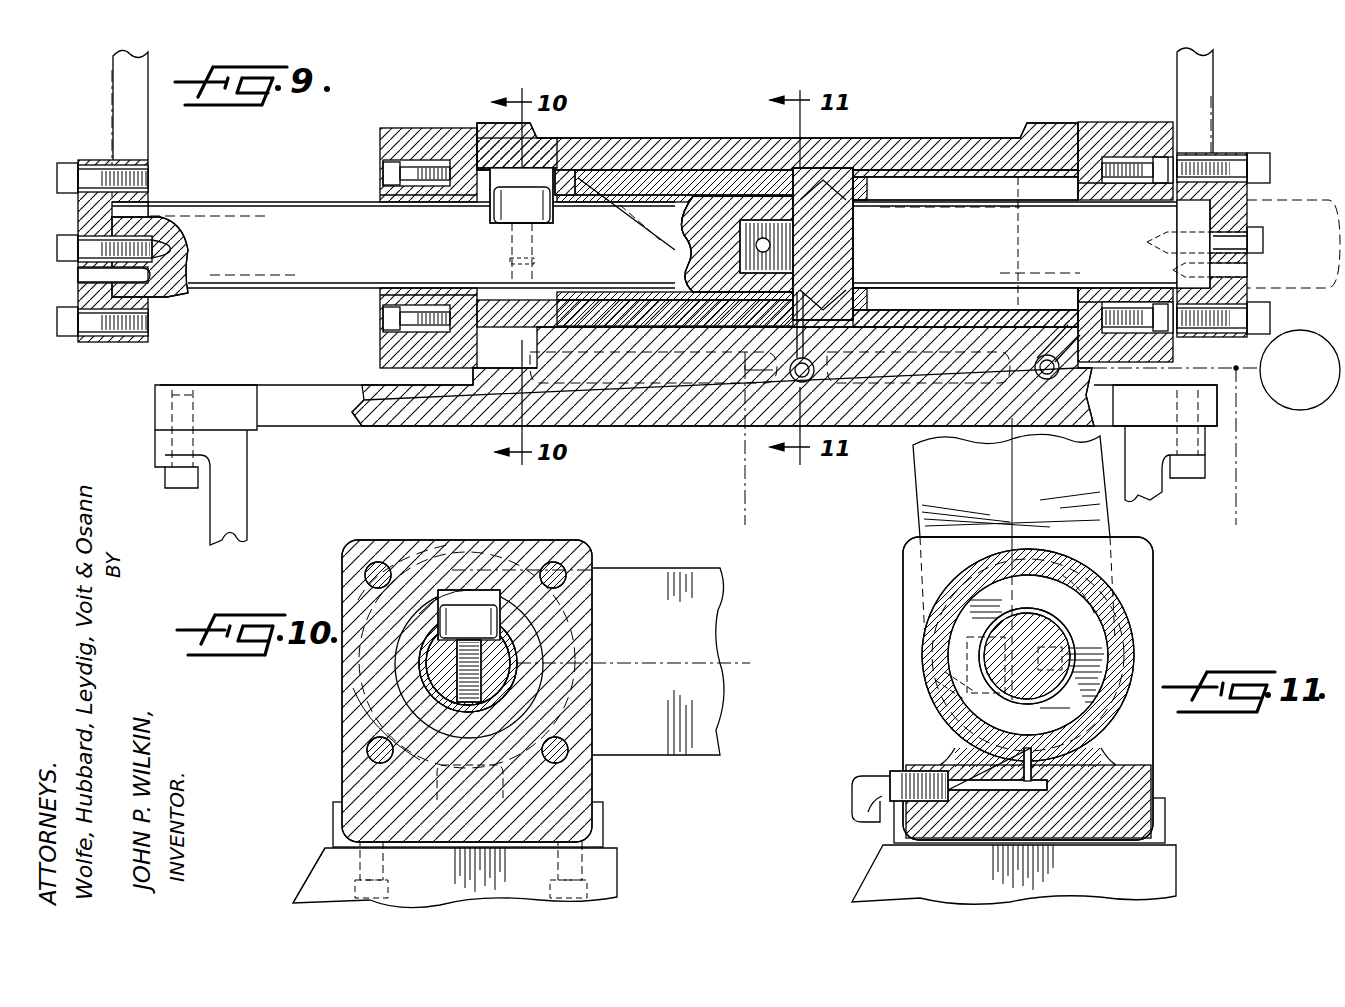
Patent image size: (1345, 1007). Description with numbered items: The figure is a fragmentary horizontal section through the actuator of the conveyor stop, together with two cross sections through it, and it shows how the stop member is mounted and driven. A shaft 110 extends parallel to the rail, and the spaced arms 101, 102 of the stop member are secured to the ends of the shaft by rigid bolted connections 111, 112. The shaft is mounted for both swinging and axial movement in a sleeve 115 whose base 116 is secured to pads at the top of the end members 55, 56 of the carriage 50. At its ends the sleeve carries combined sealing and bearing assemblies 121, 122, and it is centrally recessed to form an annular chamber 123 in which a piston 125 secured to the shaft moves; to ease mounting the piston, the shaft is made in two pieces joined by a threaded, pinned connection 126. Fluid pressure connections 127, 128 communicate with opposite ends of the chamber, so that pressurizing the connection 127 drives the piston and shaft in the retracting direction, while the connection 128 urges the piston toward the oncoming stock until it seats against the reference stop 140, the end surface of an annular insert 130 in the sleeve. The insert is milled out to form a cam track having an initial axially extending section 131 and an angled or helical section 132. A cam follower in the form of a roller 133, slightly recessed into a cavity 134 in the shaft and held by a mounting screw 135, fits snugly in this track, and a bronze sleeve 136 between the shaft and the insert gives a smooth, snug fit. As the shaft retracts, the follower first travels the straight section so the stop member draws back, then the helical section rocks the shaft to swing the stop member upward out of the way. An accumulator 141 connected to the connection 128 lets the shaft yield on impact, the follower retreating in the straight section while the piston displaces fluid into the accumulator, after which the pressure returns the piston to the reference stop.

In FIG. 10, the carriage 50 is at (300, 868).
In FIG. 9, the end member 55 is at (240, 497).
In FIG. 10, the end member 55 is at (618, 892).
In FIG. 9, the end member 56 is at (1158, 483).
In FIG. 9, the arm 101 is at (112, 92).
In FIG. 10, the arm 101 is at (715, 718).
In FIG. 11, the arm 101 is at (912, 517).
In FIG. 9, the arm 102 is at (1215, 95).
In FIG. 9, the shaft 110 is at (326, 258).
In FIG. 10, the shaft 110 is at (500, 678).
In FIG. 11, the shaft 110 is at (1060, 622).
In FIG. 9, the bolted connection 111 is at (88, 158).
In FIG. 9, the bolted connection 112 is at (1245, 160).
In FIG. 9, the sleeve 115 is at (893, 138).
In FIG. 10, the sleeve 115 is at (590, 792).
In FIG. 11, the sleeve 115 is at (1090, 655).
In FIG. 9, the base 116 is at (320, 395).
In FIG. 10, the base 116 is at (610, 833).
In FIG. 9, the sealing and bearing assembly 121 is at (440, 127).
In FIG. 9, the sealing and bearing assembly 122 is at (1112, 122).
In FIG. 9, the annular chamber 123 is at (955, 172).
In FIG. 9, the piston 125 is at (866, 196).
In FIG. 9, the threaded, pinned connection 126 is at (792, 288).
In FIG. 9, the fluid pressure connection 127 is at (745, 470).
In FIG. 11, the fluid pressure connection 127 is at (852, 807).
In FIG. 9, the fluid pressure connection 128 is at (1240, 448).
In FIG. 9, the annular insert 130 is at (700, 172).
In FIG. 10, the annular insert 130 is at (395, 668).
In FIG. 9, the axially extending section 131 is at (560, 172).
In FIG. 10, the axially extending section 131 is at (468, 590).
In FIG. 11, the axially extending section 131 is at (1085, 572).
In FIG. 9, the helical section 132 is at (665, 248).
In FIG. 11, the helical section 132 is at (935, 682).
In FIG. 9, the roller 133 is at (550, 210).
In FIG. 10, the roller 133 is at (488, 600).
In FIG. 11, the roller 133 is at (930, 652).
In FIG. 9, the cavity 134 is at (490, 215).
In FIG. 10, the cavity 134 is at (440, 630).
In FIG. 9, the mounting screw 135 is at (510, 262).
In FIG. 10, the mounting screw 135 is at (490, 665).
In FIG. 9, the sleeve 136 is at (752, 195).
In FIG. 10, the sleeve 136 is at (425, 685).
In FIG. 9, the reference stop 140 is at (805, 276).
In FIG. 11, the reference stop 140 is at (962, 622).
In FIG. 9, the accumulator 141 is at (1297, 410).